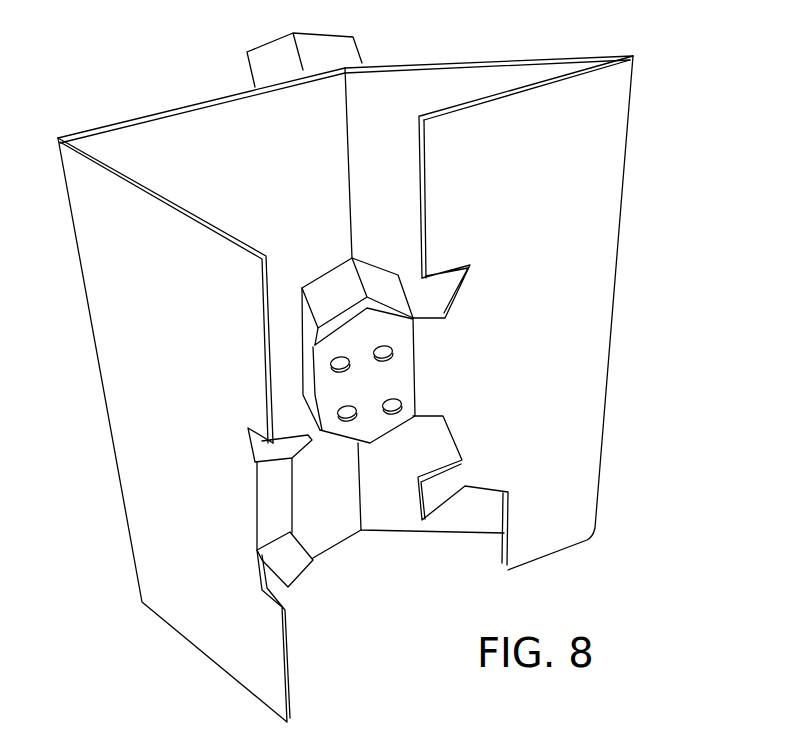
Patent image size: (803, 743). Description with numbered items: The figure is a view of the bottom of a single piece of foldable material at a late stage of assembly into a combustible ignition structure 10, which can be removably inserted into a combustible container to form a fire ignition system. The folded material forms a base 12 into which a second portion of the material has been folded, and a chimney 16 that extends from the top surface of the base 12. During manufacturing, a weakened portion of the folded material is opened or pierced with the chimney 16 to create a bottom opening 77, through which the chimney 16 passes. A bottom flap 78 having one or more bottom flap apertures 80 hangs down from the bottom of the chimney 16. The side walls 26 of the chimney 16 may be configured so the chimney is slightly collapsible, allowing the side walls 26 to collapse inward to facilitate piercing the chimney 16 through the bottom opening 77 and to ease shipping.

The combustible ignition structure 10 is at (676, 173).
The base 12 is at (500, 58).
The chimney 16 is at (216, 72).
The side wall 26 is at (332, 50).
The bottom opening 77 is at (326, 289).
The bottom flap 78 is at (396, 387).
The bottom flap apertures 80 is at (347, 366).